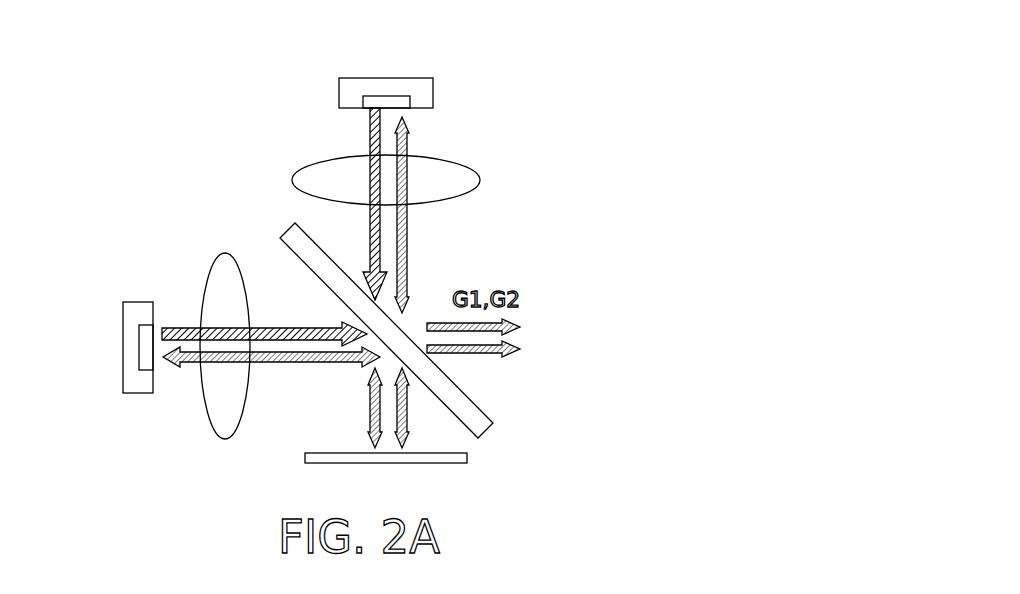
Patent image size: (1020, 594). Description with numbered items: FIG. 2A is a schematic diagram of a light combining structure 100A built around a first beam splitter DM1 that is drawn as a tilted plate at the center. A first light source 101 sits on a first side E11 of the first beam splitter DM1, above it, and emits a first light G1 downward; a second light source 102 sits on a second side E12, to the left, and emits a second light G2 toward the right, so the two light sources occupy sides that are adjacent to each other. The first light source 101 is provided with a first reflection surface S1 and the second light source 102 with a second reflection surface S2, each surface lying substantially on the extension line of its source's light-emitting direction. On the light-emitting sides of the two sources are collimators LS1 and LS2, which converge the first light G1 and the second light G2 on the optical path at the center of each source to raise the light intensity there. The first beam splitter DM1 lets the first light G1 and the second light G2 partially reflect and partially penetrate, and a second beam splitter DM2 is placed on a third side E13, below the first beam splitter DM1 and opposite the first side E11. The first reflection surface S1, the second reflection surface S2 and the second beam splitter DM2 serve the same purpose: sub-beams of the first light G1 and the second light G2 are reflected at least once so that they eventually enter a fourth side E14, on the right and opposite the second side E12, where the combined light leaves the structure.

The light combining structure 100A is at (690, 33).
The first light source 101 is at (374, 93).
The second light source 102 is at (140, 353).
The first reflection surface S1 is at (408, 78).
The second reflection surface S2 is at (123, 324).
The first light G1 is at (370, 135).
The second light G2 is at (180, 328).
The collimator LS1 is at (450, 158).
The collimator LS2 is at (226, 253).
The first beam splitter DM1 is at (472, 400).
The second beam splitter DM2 is at (438, 463).
The first side E11 is at (500, 107).
The second side E12 is at (152, 290).
The third side E13 is at (295, 480).
The fourth side E14 is at (608, 350).